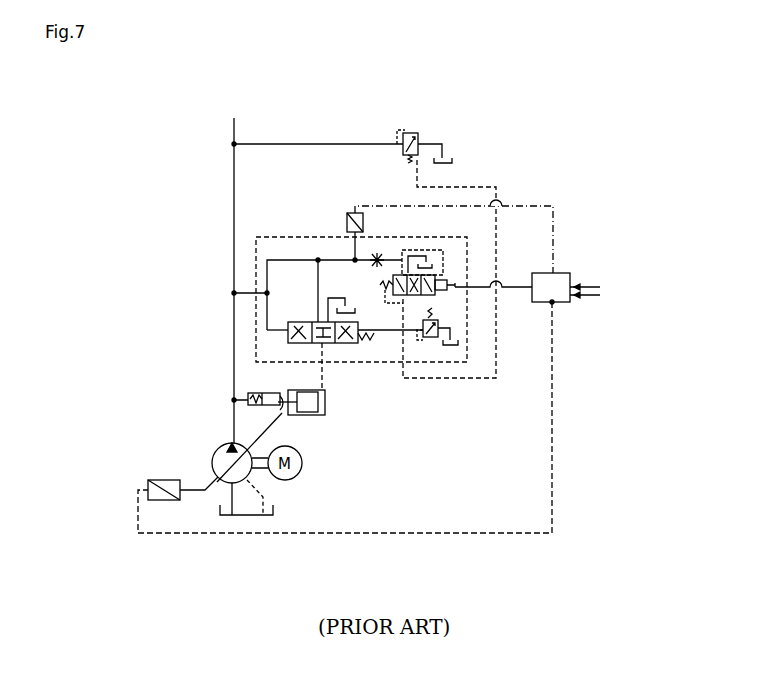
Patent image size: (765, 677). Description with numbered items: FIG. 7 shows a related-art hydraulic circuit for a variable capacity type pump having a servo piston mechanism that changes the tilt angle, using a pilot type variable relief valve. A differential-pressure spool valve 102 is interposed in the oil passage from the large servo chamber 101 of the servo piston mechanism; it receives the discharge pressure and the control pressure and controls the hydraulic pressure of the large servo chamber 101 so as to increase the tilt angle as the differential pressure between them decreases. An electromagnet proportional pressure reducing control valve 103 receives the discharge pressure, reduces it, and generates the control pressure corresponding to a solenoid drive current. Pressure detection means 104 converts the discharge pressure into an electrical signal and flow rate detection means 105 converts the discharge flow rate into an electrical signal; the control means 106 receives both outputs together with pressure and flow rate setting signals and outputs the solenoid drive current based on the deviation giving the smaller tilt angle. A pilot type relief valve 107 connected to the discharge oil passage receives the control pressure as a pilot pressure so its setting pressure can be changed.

The large servo chamber 101 is at (320, 416).
The differential-pressure spool valve 102 is at (358, 343).
The electromagnet proportional pressure reducing control valve 103 is at (440, 275).
The pressure detection means 104 is at (350, 218).
The flow rate detection means 105 is at (150, 480).
The control means 106 is at (572, 275).
The pilot type relief valve 107 is at (418, 134).